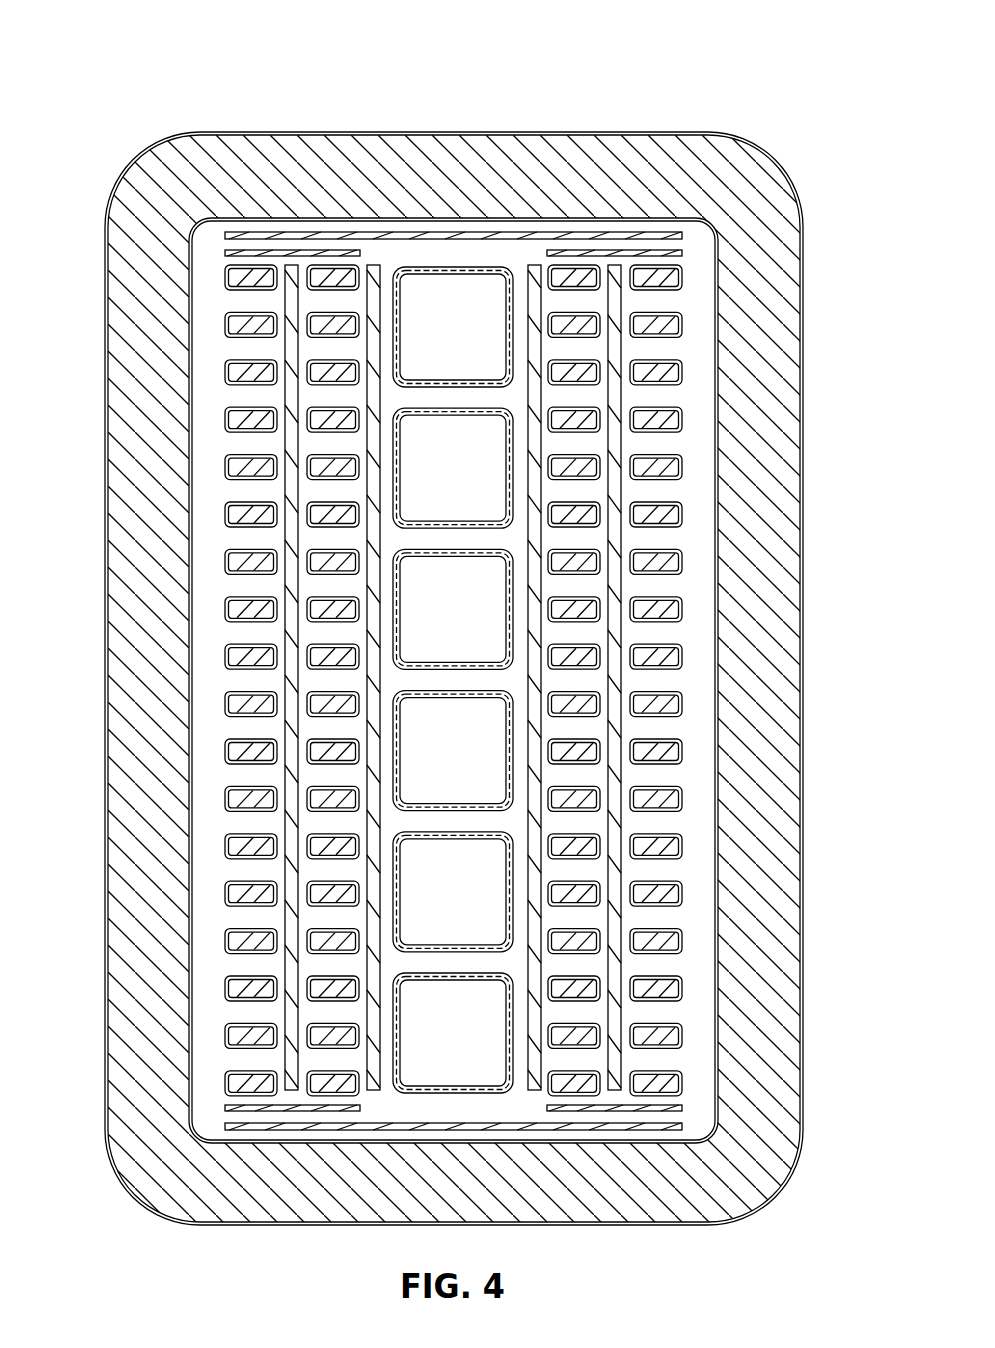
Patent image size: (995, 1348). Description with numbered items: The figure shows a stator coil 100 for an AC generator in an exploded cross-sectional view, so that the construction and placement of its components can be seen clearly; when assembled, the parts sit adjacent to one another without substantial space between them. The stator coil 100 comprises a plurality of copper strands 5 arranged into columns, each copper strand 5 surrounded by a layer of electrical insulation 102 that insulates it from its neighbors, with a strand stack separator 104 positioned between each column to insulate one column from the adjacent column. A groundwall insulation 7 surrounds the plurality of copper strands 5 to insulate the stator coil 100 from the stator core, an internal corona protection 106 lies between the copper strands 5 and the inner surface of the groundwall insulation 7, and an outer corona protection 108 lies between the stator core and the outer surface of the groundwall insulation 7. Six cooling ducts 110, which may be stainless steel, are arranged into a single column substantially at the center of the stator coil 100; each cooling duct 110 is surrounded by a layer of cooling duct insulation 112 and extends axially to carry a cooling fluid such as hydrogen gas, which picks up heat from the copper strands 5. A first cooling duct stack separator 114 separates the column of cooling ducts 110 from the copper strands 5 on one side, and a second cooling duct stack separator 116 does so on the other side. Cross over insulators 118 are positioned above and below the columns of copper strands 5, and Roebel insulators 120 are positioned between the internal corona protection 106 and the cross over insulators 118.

The stator coil 100 is at (224, 60).
The copper strands 5 is at (683, 323).
The groundwall insulation 7 is at (776, 1054).
The electrical insulation 102 is at (542, 680).
The strand stack separator 104 is at (287, 455).
The internal corona protection 106 is at (723, 787).
The outer corona protection 108 is at (806, 900).
The cooling ducts 110 is at (393, 297).
The cooling duct insulation 112 is at (455, 594).
The first cooling duct stack separator 114 is at (370, 633).
The second cooling duct stack separator 116 is at (540, 683).
The cross over insulators 118 is at (228, 252).
The Roebel insulators 120 is at (590, 235).